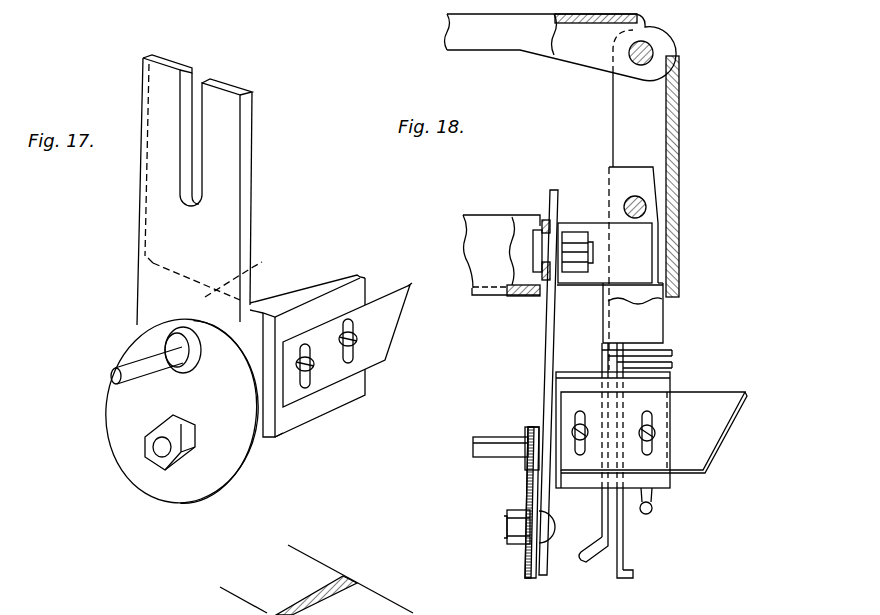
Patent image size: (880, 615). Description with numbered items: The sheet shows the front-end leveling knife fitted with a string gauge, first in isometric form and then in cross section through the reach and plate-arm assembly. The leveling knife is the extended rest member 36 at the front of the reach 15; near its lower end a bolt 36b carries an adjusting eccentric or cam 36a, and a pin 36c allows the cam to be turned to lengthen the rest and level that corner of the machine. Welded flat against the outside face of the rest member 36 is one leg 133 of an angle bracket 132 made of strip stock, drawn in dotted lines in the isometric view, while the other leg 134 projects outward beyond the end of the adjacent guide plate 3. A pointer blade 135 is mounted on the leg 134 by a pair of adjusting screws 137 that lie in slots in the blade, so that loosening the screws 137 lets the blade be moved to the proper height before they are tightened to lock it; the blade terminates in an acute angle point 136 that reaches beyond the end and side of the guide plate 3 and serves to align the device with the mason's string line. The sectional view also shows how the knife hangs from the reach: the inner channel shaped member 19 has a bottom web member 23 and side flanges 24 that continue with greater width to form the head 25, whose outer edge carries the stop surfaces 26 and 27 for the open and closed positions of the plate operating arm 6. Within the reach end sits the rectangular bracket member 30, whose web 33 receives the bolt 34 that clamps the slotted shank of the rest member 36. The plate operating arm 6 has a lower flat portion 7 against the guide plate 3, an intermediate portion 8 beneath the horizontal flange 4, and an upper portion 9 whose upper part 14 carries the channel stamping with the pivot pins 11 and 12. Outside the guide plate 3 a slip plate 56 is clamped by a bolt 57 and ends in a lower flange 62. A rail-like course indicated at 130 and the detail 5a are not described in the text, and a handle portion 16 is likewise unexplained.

In FIG. 18, the brick plate or guide plate 3 is at (603, 363).
In FIG. 18, the horizontal flange 4 is at (622, 345).
In FIG. 18, the hook 5a is at (583, 562).
In FIG. 18, the plate operating arm 6 is at (686, 122).
In FIG. 18, the lower flat portion 7 is at (603, 567).
In FIG. 18, the intermediate portion 8 is at (650, 352).
In FIG. 18, the upper portion 9 is at (677, 258).
In FIG. 18, the pivot pin 11 is at (653, 51).
In FIG. 18, the pivot pin 12 is at (648, 205).
In FIG. 18, the upper portion of the arm 14 is at (682, 80).
In FIG. 18, the reach 15 is at (475, 210).
In FIG. 18, the handle bar 16 is at (457, 33).
In FIG. 18, the inner channel shaped member 19 is at (477, 222).
In FIG. 18, the bottom web member 23 is at (523, 297).
In FIG. 18, the side flange 24 is at (548, 216).
In FIG. 18, the head 25 is at (627, 167).
In FIG. 18, the stop surface 26 is at (670, 178).
In FIG. 18, the stop surface 27 is at (677, 273).
In FIG. 18, the rectangular bracket member 30 is at (633, 244).
In FIG. 18, the web or bottom 33 is at (515, 283).
In FIG. 18, the bolt 34 is at (533, 237).
In FIG. 17, the rest member / leveling knife 36 is at (138, 220).
In FIG. 18, the rest member / leveling knife 36 is at (548, 347).
In FIG. 17, the adjusting eccentric or cam 36a is at (124, 414).
In FIG. 18, the adjusting eccentric or cam 36a is at (533, 477).
In FIG. 17, the bolt 36b is at (160, 448).
In FIG. 18, the bolt 36b is at (506, 528).
In FIG. 17, the pin 36c is at (141, 358).
In FIG. 18, the pin 36c is at (480, 445).
In FIG. 18, the slip plate 56 is at (626, 545).
In FIG. 18, the bolt 57 is at (650, 510).
In FIG. 18, the lower flange 62 is at (636, 578).
In FIG. 17, the rail 130 is at (428, 612).
In FIG. 17, the angle bracket 132 is at (316, 291).
In FIG. 18, the angle bracket 132 is at (677, 378).
In FIG. 17, the leg 133 is at (255, 268).
In FIG. 17, the leg 134 is at (315, 406).
In FIG. 18, the leg 134 is at (642, 478).
In FIG. 17, the pointer blade 135 is at (387, 323).
In FIG. 18, the pointer blade 135 is at (699, 434).
In FIG. 17, the acute angle point 136 is at (424, 264).
In FIG. 18, the acute angle point 136 is at (748, 392).
In FIG. 17, the adjusting screw 137 is at (310, 368).
In FIG. 18, the adjusting screw 137 is at (578, 428).